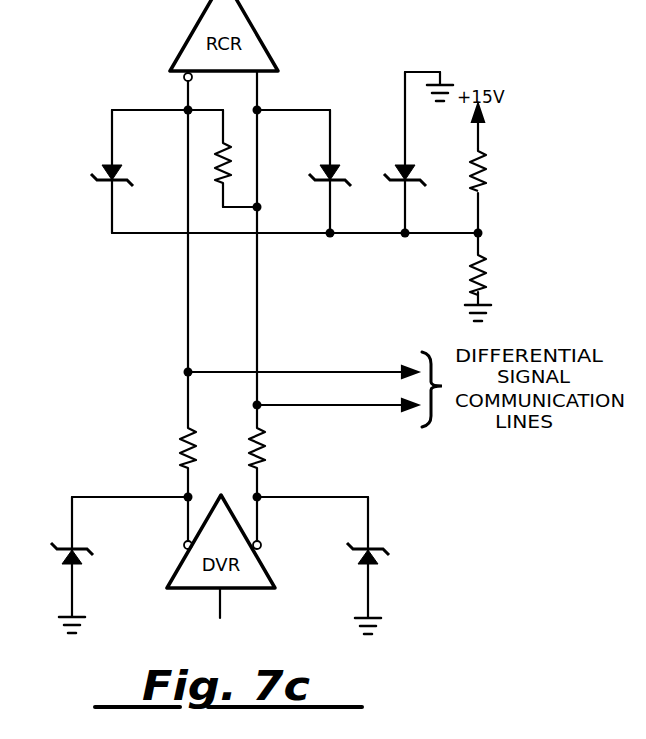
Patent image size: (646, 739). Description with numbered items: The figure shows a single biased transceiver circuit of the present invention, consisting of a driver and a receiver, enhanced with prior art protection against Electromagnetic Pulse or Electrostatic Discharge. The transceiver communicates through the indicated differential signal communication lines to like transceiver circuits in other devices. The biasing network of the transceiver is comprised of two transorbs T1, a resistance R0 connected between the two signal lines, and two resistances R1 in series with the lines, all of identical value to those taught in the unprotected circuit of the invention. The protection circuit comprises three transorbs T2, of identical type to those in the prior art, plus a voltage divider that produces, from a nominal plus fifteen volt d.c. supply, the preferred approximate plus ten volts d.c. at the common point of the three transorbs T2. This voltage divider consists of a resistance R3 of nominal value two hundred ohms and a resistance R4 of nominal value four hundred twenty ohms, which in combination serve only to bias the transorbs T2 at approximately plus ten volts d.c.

The transorb T2 is at (266, 177).
The resistance R0 is at (233, 161).
The resistance R3 is at (489, 169).
The resistance R4 is at (489, 273).
The resistance R1 is at (233, 446).
The transorb T1 is at (222, 557).